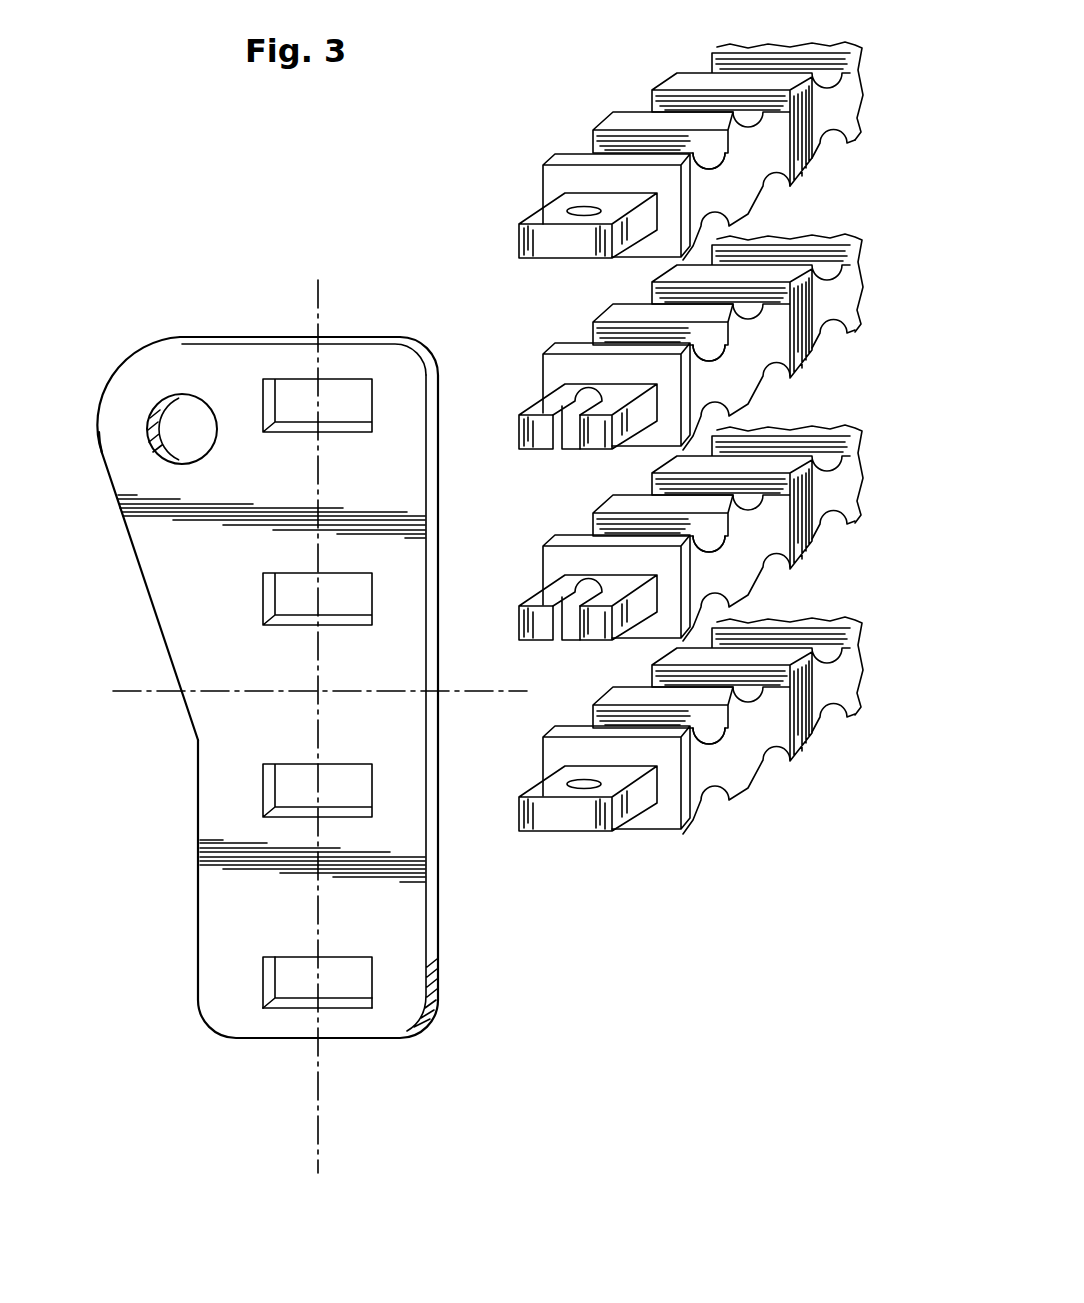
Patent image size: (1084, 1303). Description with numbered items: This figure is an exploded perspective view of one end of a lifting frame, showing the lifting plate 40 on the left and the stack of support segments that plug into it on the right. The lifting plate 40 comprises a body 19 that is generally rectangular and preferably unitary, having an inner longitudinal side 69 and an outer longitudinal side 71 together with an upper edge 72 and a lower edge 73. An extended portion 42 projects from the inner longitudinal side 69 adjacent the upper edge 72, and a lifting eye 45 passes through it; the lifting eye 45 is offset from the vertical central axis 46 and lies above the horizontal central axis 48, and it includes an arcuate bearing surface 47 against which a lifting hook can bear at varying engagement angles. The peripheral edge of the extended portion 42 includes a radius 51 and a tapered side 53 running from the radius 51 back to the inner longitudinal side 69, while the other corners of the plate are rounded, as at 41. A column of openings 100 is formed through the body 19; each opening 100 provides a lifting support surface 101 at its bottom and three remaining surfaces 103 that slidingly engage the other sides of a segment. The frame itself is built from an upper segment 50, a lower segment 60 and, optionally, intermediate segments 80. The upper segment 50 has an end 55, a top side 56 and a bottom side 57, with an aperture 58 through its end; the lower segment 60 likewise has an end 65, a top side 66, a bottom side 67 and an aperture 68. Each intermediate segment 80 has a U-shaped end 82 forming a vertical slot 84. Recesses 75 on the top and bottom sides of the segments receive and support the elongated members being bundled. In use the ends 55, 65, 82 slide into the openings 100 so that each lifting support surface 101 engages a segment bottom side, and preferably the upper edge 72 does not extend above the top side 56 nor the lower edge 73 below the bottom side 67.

The body 19 is at (97, 423).
The lifting plate 40 is at (287, 694).
The rounded corner 41 is at (428, 355).
The extended portion 42 is at (157, 538).
The lifting eye 45 is at (178, 412).
The vertical central axis 46 is at (318, 1102).
The arcuate bearing surface 47 is at (138, 412).
The horizontal central axis 48 is at (157, 687).
The upper segment 50 is at (659, 143).
The radius 51 is at (130, 358).
The tapered side 53 is at (137, 567).
The end of upper segment 55 is at (556, 203).
The top side of upper segment 56 is at (638, 122).
The bottom side of upper segment 57 is at (665, 326).
The aperture 58 is at (584, 211).
The lower segment 60 is at (684, 766).
The end of lower segment 65 is at (578, 832).
The top side of lower segment 66 is at (625, 700).
The bottom side of lower segment 67 is at (747, 790).
The aperture 68 is at (584, 784).
The inner longitudinal side 69 is at (198, 766).
The outer longitudinal side 71 is at (432, 748).
The upper edge 72 is at (265, 340).
The lower edge 73 is at (273, 1038).
The recesses 75 is at (708, 155).
The intermediate segment 80 is at (833, 488).
The end of intermediate segment 82 is at (555, 403).
The vertical slot 84 is at (573, 427).
The openings 100 is at (352, 990).
The lifting support surface 101 is at (335, 1003).
The surfaces 103 is at (363, 978).